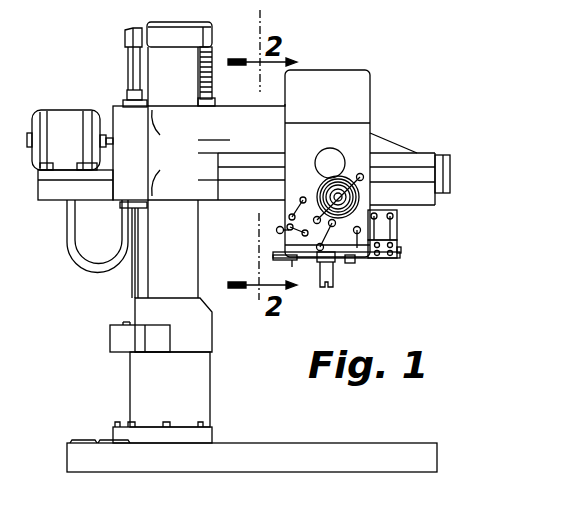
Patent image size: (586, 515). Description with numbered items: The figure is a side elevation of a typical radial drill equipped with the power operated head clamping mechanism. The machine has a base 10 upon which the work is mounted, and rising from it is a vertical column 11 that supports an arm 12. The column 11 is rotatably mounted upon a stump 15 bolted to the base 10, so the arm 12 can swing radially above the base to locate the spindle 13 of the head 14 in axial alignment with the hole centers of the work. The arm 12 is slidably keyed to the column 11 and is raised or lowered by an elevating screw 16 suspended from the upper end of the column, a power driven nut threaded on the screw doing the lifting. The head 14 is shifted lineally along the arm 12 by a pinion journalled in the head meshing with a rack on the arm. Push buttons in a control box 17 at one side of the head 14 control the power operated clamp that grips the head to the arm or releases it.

The base 10 is at (313, 445).
The vertical column 11 is at (160, 277).
The arm 12 is at (241, 120).
The spindle 13 is at (325, 275).
The head 14 is at (353, 107).
The stump 15 is at (138, 383).
The elevating screw 16 is at (213, 57).
The control box 17 is at (402, 243).